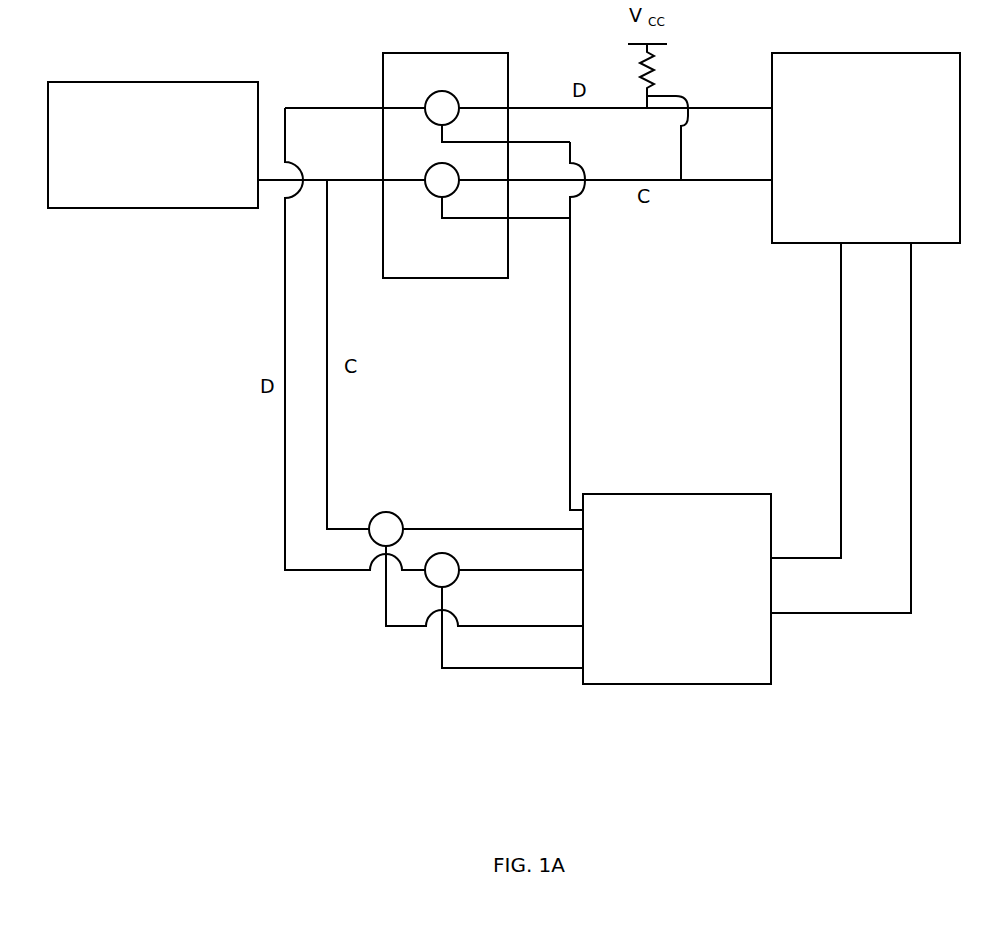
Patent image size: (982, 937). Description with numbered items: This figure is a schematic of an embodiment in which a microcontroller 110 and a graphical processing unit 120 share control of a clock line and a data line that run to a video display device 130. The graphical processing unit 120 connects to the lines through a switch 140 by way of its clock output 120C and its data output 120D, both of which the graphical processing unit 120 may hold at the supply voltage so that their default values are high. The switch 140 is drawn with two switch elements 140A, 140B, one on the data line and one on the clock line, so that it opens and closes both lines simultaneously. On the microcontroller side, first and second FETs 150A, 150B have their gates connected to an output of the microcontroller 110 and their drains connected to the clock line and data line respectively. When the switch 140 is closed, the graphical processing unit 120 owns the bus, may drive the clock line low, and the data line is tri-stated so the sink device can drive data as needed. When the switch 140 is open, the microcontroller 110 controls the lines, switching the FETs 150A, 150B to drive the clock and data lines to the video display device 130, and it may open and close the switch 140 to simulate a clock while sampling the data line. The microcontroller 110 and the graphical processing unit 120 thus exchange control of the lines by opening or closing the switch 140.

The microcontroller 110 is at (677, 589).
The graphical processing unit 120 is at (866, 148).
The clock output 120C is at (736, 193).
The data output 120D is at (736, 96).
The video display device 130 is at (153, 145).
The switch 140 is at (445, 149).
The switch 140A is at (431, 93).
The switch 140B is at (437, 198).
The first FET 150A is at (396, 514).
The second FET 150B is at (425, 577).